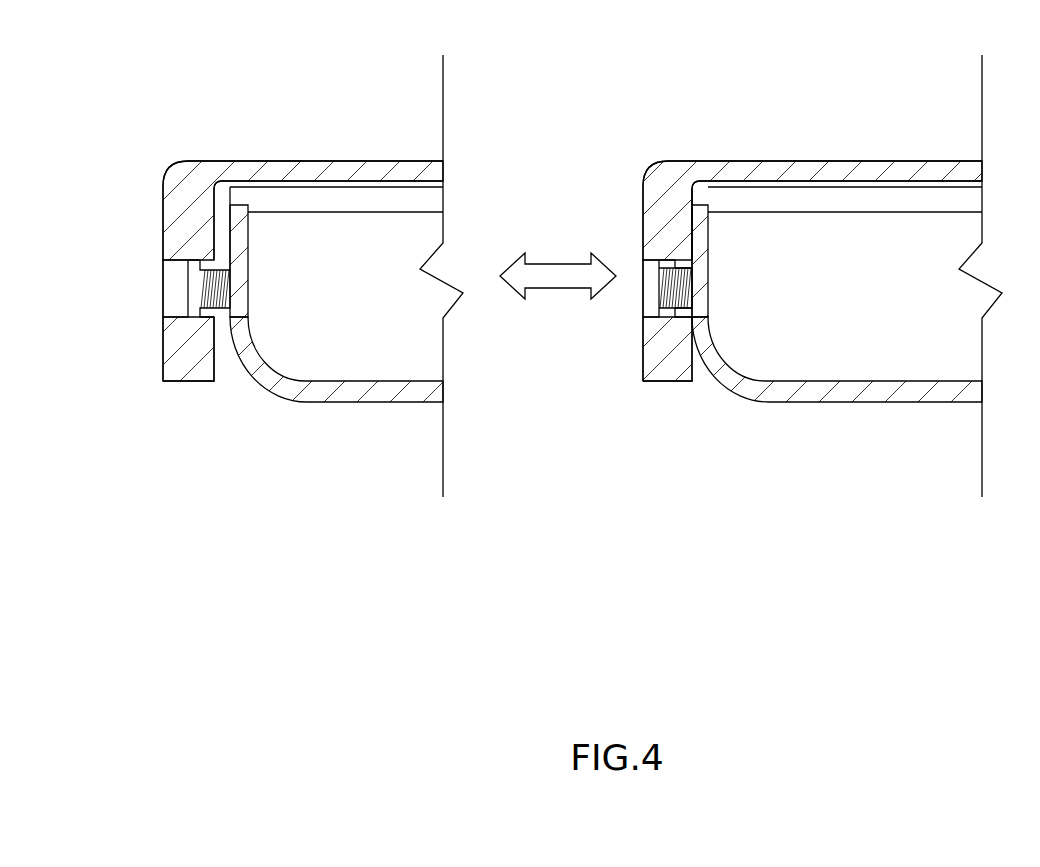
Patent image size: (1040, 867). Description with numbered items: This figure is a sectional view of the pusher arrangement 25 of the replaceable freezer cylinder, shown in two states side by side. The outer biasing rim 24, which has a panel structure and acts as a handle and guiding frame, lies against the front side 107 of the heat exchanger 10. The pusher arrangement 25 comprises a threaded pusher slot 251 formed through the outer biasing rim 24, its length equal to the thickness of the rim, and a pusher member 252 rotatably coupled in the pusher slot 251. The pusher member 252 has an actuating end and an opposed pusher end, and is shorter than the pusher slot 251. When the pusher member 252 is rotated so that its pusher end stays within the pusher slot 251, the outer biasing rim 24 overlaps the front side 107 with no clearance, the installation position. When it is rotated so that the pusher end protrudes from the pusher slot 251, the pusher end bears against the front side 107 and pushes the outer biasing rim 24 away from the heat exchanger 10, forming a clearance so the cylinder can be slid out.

The heat exchanger 10 is at (362, 393).
The front side 107 is at (237, 229).
The outer biasing rim 24 is at (190, 222).
The pusher arrangement 25 is at (428, 375).
The pusher slot 251 is at (153, 299).
The pusher member 252 is at (202, 310).